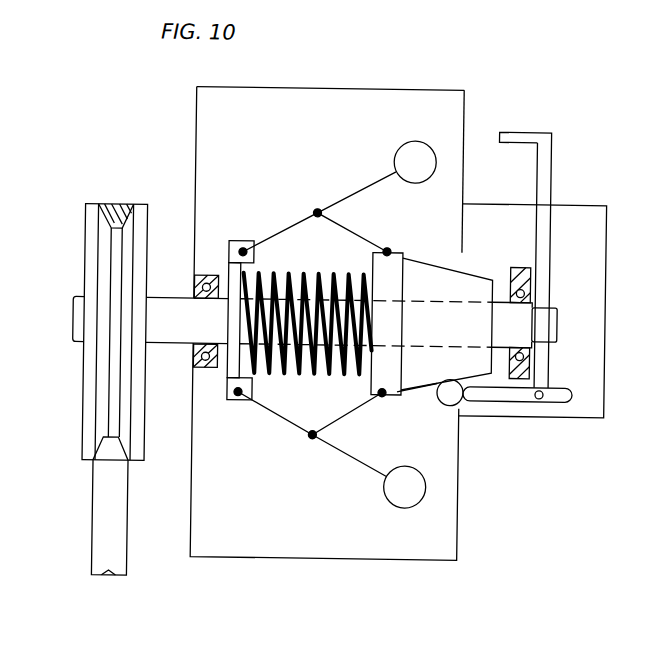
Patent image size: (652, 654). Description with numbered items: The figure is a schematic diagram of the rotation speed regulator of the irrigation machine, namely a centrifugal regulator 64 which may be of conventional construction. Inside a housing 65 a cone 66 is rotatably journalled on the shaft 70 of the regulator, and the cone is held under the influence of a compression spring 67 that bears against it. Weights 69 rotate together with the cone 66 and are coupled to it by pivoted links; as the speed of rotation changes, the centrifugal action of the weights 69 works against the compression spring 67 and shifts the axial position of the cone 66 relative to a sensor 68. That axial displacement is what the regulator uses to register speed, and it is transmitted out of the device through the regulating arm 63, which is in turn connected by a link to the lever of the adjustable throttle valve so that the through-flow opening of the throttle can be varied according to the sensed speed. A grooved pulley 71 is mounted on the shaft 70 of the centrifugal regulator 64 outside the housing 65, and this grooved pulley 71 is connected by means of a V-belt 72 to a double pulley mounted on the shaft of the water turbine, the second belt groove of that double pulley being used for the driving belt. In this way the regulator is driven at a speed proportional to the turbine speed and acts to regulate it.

The regulating arm 63 is at (551, 175).
The centrifugal regulator 64 is at (411, 88).
The housing 65 is at (334, 87).
The cone 66 is at (425, 263).
The compression spring 67 is at (298, 276).
The sensor 68 is at (441, 403).
The weights 69 is at (396, 152).
The shaft 70 is at (170, 299).
The grooved pulley 71 is at (94, 208).
The V-belt 72 is at (95, 493).